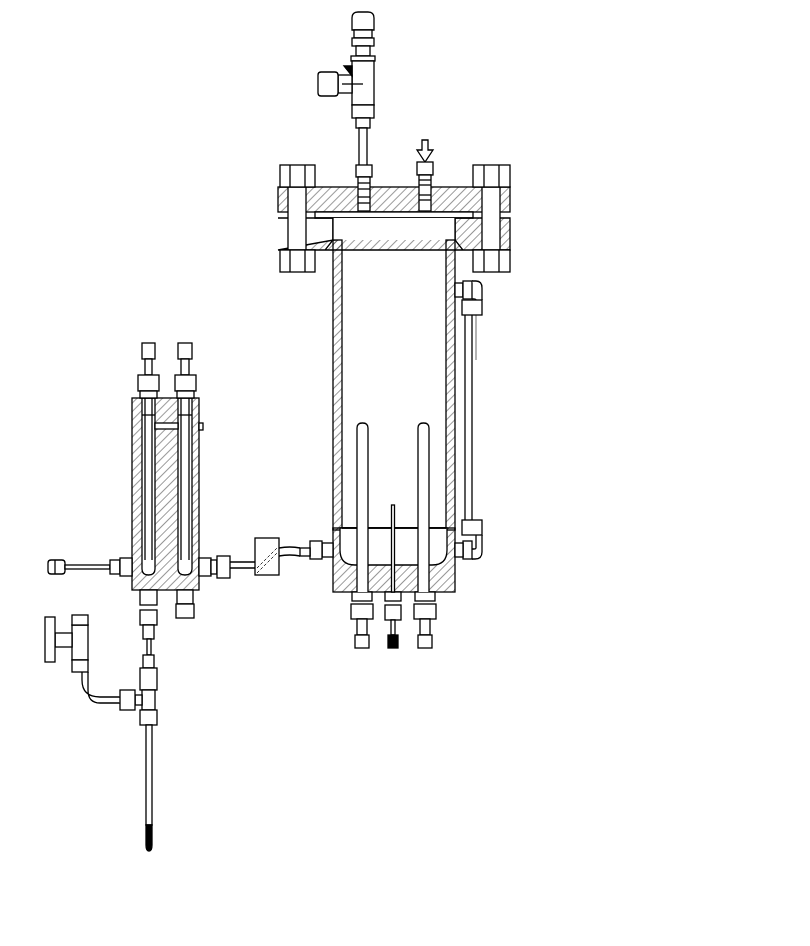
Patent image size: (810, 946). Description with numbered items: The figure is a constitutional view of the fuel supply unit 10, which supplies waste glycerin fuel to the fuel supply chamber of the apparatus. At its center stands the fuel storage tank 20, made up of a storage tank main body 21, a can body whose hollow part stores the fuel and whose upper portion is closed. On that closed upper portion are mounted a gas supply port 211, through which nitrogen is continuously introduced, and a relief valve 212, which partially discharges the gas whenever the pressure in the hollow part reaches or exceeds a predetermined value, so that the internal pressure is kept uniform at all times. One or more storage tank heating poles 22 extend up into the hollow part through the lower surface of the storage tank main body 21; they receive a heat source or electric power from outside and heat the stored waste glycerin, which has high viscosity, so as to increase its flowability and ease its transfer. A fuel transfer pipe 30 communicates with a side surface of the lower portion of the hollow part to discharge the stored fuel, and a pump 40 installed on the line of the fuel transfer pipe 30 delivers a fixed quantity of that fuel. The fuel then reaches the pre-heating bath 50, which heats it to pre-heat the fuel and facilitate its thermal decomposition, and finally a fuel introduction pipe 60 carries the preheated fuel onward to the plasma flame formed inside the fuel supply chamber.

The fuel supply unit 10 is at (145, 206).
The fuel storage tank 20 is at (533, 357).
The storage tank main body 21 is at (448, 376).
The storage tank heating pole 22 is at (361, 463).
The gas supply port 211 is at (431, 166).
The relief valve 212 is at (366, 88).
The fuel transfer pipe 30 is at (298, 556).
The pump 40 is at (268, 545).
The pre-heating bath 50 is at (132, 482).
The fuel introduction pipe 60 is at (150, 767).